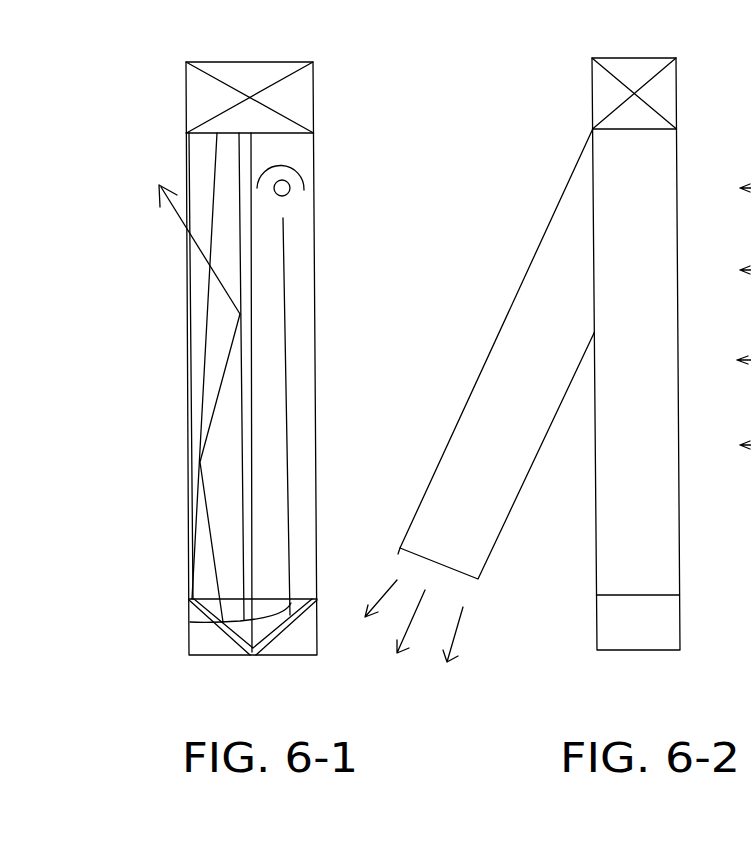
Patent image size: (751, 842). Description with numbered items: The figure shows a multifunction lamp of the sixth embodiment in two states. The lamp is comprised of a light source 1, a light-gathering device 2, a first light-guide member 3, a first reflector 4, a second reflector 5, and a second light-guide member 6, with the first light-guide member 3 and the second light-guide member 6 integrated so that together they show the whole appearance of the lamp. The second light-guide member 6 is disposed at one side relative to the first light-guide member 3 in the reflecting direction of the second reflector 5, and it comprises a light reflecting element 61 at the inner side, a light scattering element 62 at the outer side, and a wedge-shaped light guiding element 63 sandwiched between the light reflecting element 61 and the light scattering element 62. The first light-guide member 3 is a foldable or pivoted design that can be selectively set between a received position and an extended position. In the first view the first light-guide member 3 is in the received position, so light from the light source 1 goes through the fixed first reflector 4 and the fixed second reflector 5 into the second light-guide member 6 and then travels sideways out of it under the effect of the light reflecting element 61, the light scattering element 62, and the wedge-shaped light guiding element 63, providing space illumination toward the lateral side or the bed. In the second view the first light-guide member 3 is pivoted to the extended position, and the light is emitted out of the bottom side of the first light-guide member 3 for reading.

In FIG. 6-1, the light source 1 is at (288, 193).
In FIG. 6-1, the light-gathering device 2 is at (288, 171).
In FIG. 6-1, the first light-guide member 3 is at (297, 367).
In FIG. 6-2, the first light-guide member 3 is at (518, 338).
In FIG. 6-1, the first reflector 4 is at (280, 637).
In FIG. 6-1, the second reflector 5 is at (190, 622).
In FIG. 6-1, the second light-guide member 6 is at (182, 265).
In FIG. 6-2, the second light-guide member 6 is at (610, 550).
In FIG. 6-1, the light reflecting element 61 is at (244, 383).
In FIG. 6-1, the light scattering element 62 is at (187, 151).
In FIG. 6-1, the wedge-shaped light guiding element 63 is at (220, 319).